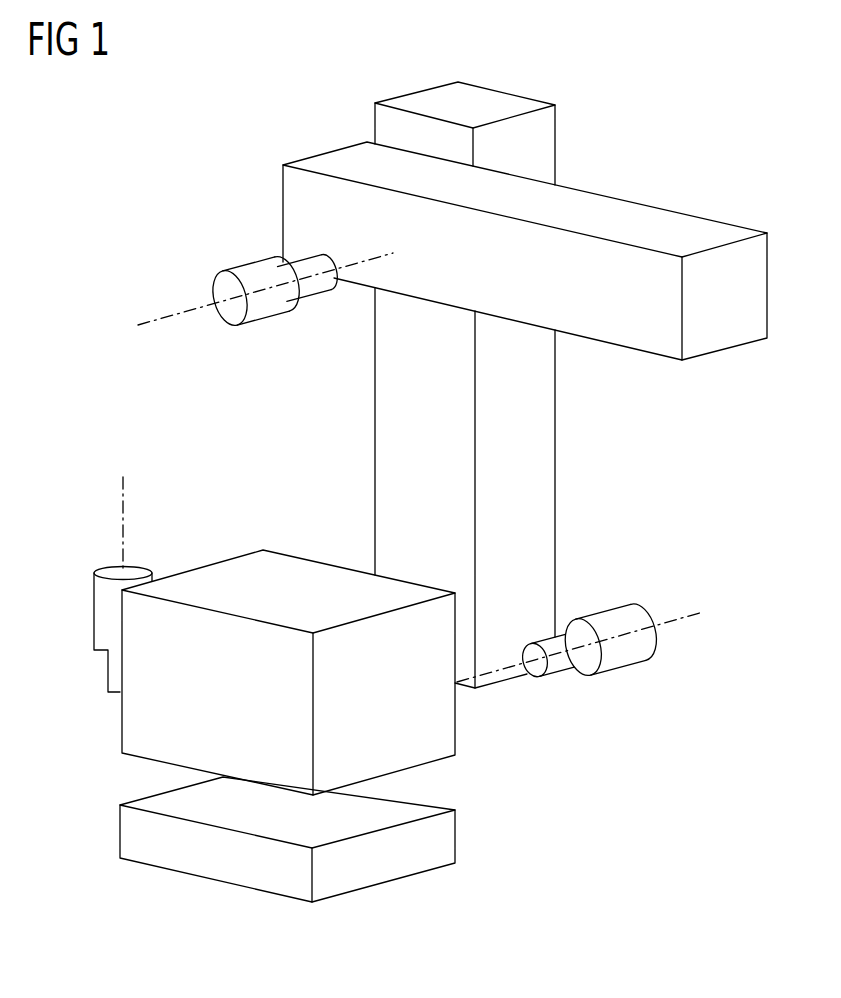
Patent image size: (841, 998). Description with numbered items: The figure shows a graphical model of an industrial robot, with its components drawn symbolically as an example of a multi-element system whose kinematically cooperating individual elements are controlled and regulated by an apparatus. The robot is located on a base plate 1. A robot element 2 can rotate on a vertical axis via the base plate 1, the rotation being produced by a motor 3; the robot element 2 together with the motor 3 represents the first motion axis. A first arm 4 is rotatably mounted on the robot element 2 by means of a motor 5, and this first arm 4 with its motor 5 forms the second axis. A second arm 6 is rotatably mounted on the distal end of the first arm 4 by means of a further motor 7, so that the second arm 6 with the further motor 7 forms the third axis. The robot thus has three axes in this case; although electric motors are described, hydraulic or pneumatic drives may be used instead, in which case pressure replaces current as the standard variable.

The base plate 1 is at (442, 840).
The robot element 2 is at (440, 728).
The motor 3 is at (108, 615).
The first arm 4 is at (542, 468).
The motor 5 is at (620, 655).
The second arm 6 is at (642, 218).
The further motor 7 is at (257, 277).